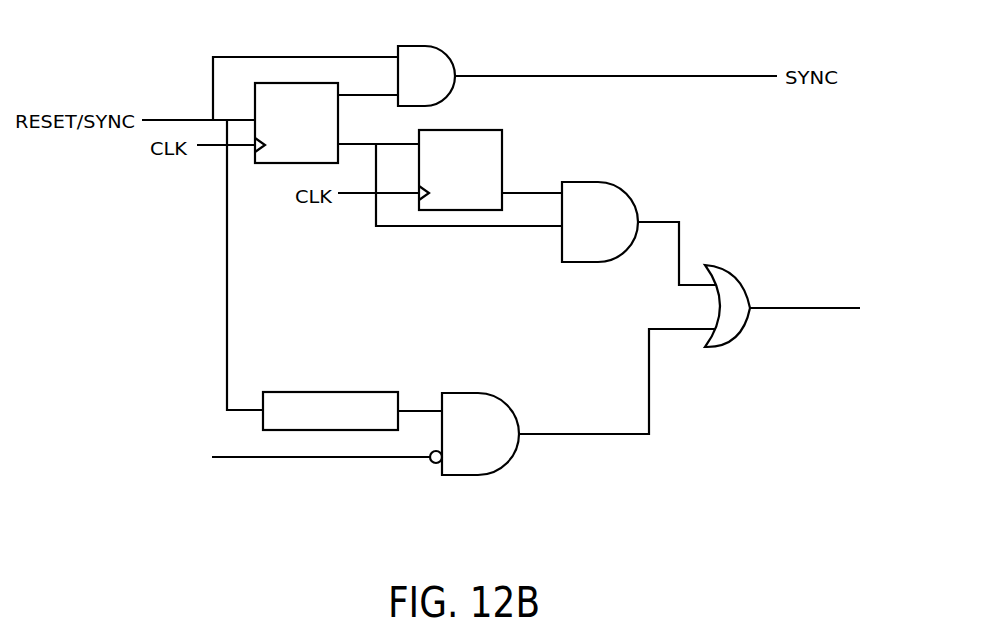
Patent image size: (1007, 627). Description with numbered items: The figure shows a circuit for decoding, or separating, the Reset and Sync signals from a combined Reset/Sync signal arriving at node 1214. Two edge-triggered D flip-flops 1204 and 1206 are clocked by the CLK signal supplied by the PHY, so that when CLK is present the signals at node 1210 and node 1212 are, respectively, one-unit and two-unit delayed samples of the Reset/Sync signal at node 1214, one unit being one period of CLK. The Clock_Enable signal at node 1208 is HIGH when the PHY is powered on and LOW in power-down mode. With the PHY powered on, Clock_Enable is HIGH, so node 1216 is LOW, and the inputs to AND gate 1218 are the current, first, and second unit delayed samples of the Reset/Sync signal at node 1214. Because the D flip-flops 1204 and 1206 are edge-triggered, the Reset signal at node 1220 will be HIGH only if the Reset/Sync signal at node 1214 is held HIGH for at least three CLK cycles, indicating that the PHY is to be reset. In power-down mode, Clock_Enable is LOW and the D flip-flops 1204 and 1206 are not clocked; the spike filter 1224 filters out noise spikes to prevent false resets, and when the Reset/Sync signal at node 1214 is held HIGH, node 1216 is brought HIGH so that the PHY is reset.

The D flip-flop 1204 is at (263, 164).
The D flip-flop 1206 is at (503, 131).
The node 1208 is at (284, 460).
The node 1210 is at (376, 143).
The node 1212 is at (535, 192).
The node 1214 is at (226, 115).
The node 1216 is at (683, 333).
The AND gate 1218 is at (627, 183).
The node 1220 is at (800, 310).
The spike filter 1224 is at (386, 390).